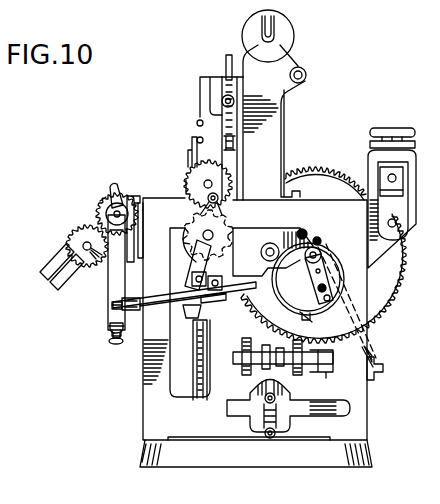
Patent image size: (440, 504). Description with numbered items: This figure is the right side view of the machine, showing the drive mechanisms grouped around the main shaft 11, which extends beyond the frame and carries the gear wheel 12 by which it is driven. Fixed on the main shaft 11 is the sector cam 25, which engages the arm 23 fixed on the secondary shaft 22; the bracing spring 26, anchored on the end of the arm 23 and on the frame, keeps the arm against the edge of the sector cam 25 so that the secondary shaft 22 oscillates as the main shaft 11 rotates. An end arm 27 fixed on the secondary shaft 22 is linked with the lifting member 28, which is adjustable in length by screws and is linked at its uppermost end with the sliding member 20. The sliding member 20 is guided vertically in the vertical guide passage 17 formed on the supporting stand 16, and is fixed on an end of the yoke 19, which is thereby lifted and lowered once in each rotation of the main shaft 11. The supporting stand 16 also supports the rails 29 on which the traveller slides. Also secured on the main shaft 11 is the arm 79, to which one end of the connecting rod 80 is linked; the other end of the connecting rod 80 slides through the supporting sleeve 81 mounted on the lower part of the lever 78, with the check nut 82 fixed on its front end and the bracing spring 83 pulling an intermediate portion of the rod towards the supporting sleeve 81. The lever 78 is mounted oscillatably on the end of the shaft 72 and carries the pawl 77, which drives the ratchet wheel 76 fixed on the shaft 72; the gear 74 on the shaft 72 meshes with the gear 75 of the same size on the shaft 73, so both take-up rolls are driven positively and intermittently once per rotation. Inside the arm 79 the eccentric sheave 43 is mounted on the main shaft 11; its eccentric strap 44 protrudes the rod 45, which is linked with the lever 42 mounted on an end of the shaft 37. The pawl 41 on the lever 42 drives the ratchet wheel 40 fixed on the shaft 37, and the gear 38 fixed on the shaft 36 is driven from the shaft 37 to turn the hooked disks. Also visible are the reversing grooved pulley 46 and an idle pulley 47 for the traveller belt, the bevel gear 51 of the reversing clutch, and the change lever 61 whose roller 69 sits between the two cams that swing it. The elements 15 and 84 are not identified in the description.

The main shaft 11 is at (308, 232).
The gear wheel 12 is at (331, 171).
The housing 15 is at (145, 383).
The supporting stand 16 is at (281, 130).
The vertical guide passage 17 is at (222, 80).
The yoke 19 is at (226, 58).
The sliding member 20 is at (206, 85).
The secondary shaft 22 is at (271, 243).
The arm 23 is at (292, 238).
The sector cam 25 is at (322, 240).
The bracing spring 26 is at (373, 362).
The end arm 27 is at (247, 236).
The lifting member 28 is at (238, 170).
The rail 29 is at (197, 123).
The shaft 36 is at (205, 181).
The shaft 37 is at (206, 240).
The gear 38 is at (186, 186).
The ratchet wheel 40 is at (190, 240).
The pawl 41 is at (208, 200).
The lever 42 is at (192, 318).
The eccentric sheave 43 is at (318, 308).
The eccentric strap 44 is at (352, 278).
The rod 45 is at (212, 302).
The reversing grooved pulley 46 is at (191, 388).
The idle pulley 47 is at (192, 147).
The bevel gear 51 is at (247, 341).
The change lever 61 is at (262, 425).
The roller 69 is at (272, 425).
The shaft 72 is at (130, 202).
The shaft 73 is at (110, 279).
The gear 74 is at (97, 214).
The gear 75 is at (70, 237).
The ratchet wheel 76 is at (101, 201).
The pawl 77 is at (112, 186).
The lever 78 is at (110, 302).
The arm 79 is at (336, 270).
The connecting rod 80 is at (158, 301).
The supporting sleeve 81 is at (131, 310).
The check nut 82 is at (111, 306).
The bracing spring 83 is at (160, 308).
The clamp 84 is at (114, 340).